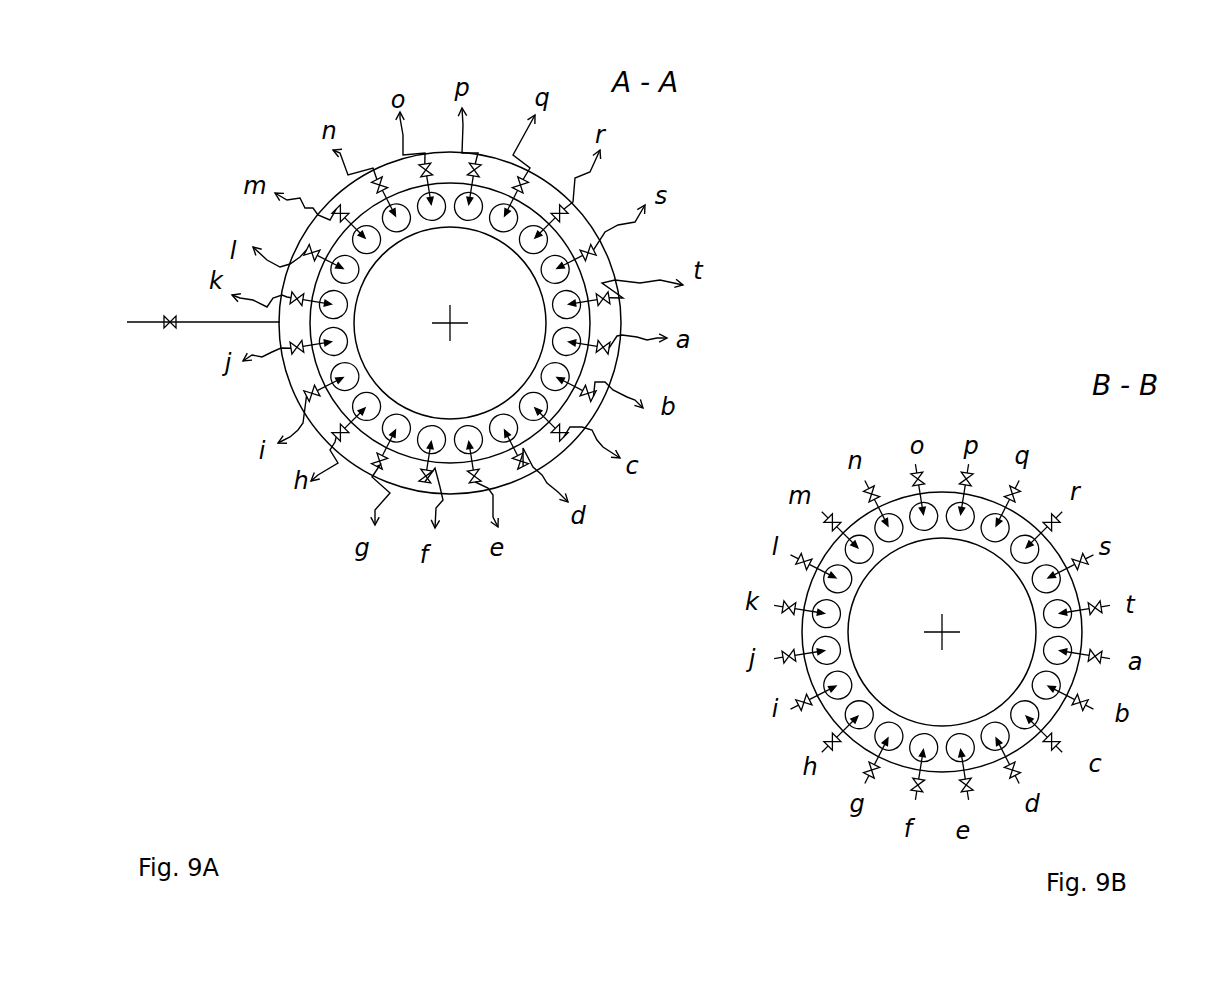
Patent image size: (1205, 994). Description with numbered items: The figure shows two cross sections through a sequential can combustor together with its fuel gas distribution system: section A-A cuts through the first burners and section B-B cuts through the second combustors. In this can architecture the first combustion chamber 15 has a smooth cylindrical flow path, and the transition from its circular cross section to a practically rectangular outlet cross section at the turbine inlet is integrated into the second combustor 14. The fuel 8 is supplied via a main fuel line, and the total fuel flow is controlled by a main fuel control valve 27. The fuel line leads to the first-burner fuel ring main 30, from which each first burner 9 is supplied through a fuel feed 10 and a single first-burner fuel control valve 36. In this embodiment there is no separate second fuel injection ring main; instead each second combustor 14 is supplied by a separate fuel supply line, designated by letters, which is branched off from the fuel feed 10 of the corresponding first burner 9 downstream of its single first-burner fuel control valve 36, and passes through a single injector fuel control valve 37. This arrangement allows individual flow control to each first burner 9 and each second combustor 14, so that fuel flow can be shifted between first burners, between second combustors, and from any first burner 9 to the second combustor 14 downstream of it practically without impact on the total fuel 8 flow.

In FIG. 9A, the fuel 8 is at (195, 323).
In FIG. 9A, the first burner 9 is at (556, 268).
In FIG. 9A, the fuel feed 10 is at (322, 210).
In FIG. 9B, the fuel feed 10 is at (910, 616).
In FIG. 9B, the second combustor 14 is at (1050, 572).
In FIG. 9A, the first combustion chamber 15 is at (527, 431).
In FIG. 9A, the main fuel control valve 27 is at (170, 328).
In FIG. 9A, the first-burner fuel ring main 30 is at (347, 460).
In FIG. 9A, the single first-burner fuel control valve 36 is at (302, 263).
In FIG. 9B, the single injector fuel control valve 37 is at (948, 646).